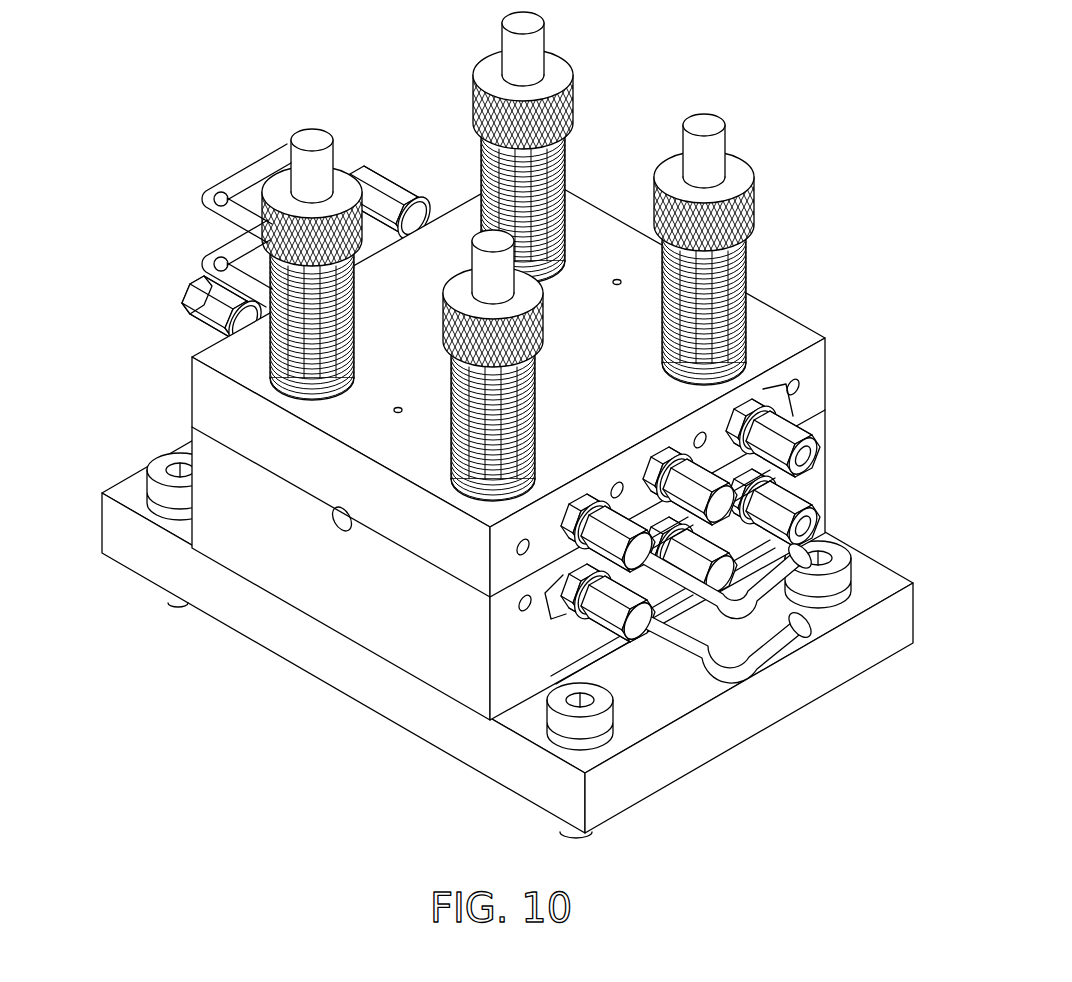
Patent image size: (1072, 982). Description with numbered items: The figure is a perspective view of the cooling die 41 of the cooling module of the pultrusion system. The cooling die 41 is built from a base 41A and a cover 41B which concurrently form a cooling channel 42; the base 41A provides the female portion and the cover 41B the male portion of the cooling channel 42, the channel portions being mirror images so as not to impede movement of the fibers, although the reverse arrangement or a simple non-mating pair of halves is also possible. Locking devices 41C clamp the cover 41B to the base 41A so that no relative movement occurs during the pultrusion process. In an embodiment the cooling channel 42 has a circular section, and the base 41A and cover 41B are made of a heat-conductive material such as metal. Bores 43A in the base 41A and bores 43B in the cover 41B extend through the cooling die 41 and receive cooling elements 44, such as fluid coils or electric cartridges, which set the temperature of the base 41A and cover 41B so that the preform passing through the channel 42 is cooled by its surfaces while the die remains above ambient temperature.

The cooling die 41 is at (792, 257).
The base 41A is at (883, 563).
The cover 41B is at (823, 348).
The locking devices 41C is at (323, 133).
The cooling channel 42 is at (340, 522).
The bores 43A is at (545, 605).
The bores 43B is at (790, 392).
The cooling elements 44 is at (197, 253).